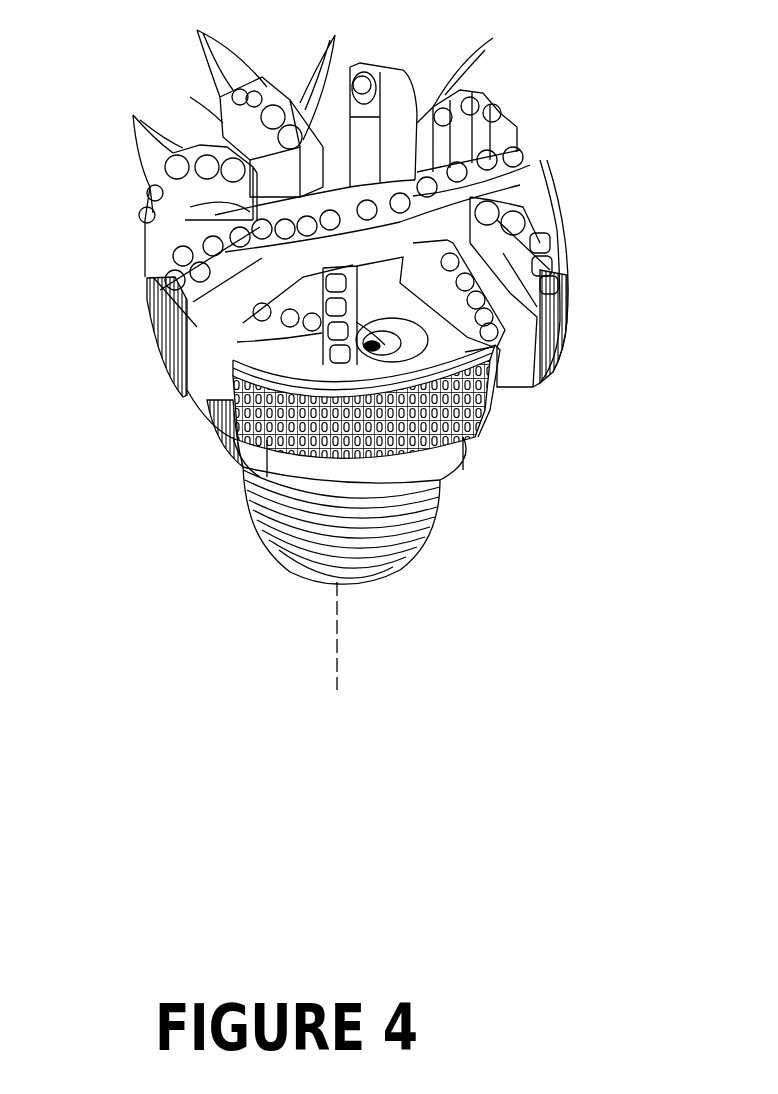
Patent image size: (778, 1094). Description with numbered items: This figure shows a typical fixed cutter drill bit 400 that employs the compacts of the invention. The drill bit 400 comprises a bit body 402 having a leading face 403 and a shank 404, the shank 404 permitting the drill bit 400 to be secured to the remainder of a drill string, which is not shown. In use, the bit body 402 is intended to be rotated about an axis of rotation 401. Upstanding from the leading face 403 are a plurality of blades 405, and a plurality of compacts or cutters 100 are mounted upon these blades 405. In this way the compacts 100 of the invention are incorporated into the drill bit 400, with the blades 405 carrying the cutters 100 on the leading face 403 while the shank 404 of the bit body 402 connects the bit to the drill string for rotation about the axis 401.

The compact 100 is at (505, 42).
The drill bit 400 is at (548, 155).
The axis of rotation 401 is at (333, 660).
The bit body 402 is at (227, 518).
The leading face 403 is at (150, 327).
The shank 404 is at (430, 527).
The blade 405 is at (222, 108).